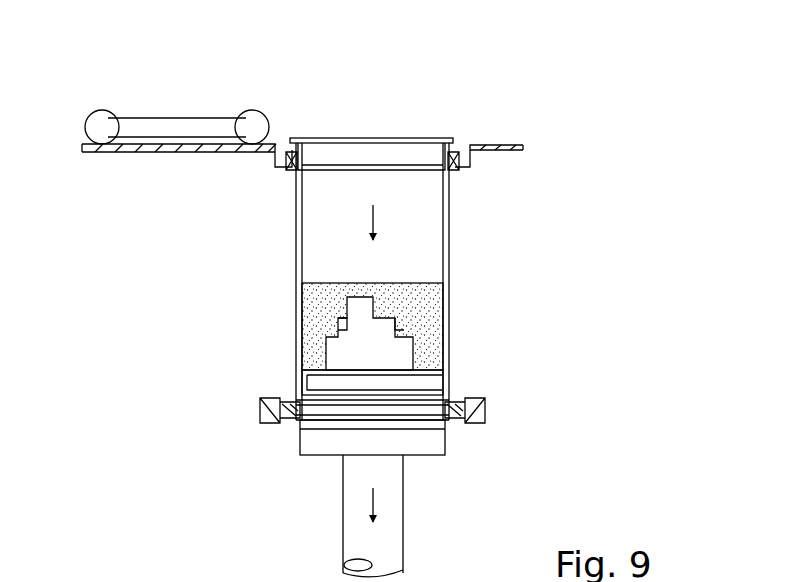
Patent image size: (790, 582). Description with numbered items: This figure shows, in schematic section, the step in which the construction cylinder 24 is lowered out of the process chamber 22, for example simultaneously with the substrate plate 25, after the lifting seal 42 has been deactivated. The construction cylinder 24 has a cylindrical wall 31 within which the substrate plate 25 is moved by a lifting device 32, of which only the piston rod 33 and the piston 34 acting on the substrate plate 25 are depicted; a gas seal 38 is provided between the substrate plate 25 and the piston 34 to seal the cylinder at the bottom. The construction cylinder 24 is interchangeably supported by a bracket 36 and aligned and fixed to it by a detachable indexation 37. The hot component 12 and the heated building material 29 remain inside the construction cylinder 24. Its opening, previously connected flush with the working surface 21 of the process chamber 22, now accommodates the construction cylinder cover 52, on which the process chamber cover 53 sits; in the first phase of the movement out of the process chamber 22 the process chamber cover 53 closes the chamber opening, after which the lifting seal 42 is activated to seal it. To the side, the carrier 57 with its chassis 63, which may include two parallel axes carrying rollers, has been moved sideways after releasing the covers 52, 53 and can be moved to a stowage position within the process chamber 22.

The component 12 is at (348, 318).
The working surface 21 is at (127, 150).
The process chamber 22 is at (516, 138).
The construction cylinder 24 is at (425, 247).
The substrate plate 25 is at (428, 377).
The building material 29 is at (423, 302).
The cylindrical wall 31 is at (298, 262).
The lifting device 32 is at (363, 516).
The piston rod 33 is at (392, 530).
The piston 34 is at (298, 442).
The bracket 36 is at (458, 395).
The indexation 37 is at (260, 402).
The gas seal 38 is at (297, 395).
The lifting seal 42 is at (288, 168).
The construction cylinder cover 52 is at (418, 167).
The process chamber cover 53 is at (410, 157).
The carrier 57 is at (182, 314).
The chassis 63 is at (253, 122).